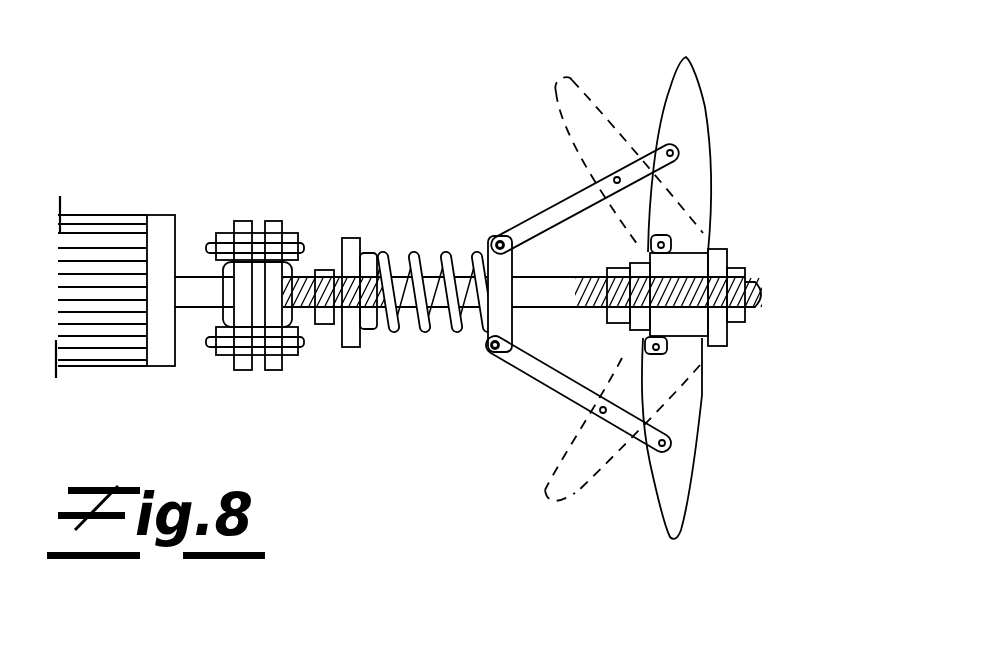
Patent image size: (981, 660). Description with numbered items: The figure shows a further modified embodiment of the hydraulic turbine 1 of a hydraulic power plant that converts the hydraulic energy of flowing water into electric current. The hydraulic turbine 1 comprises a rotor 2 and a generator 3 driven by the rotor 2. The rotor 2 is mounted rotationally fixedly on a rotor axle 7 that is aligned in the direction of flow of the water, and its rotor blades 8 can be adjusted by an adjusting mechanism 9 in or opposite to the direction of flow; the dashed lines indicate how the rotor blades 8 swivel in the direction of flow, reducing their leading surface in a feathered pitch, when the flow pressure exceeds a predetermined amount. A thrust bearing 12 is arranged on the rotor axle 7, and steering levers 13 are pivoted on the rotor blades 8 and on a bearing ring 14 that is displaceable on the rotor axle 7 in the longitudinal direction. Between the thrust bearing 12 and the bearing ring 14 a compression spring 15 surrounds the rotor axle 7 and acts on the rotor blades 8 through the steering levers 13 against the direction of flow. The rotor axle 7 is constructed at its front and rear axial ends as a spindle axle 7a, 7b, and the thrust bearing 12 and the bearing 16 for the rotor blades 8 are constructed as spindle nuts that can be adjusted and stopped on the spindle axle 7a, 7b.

The hydraulic turbine 1 is at (757, 81).
The rotor 2 is at (690, 521).
The generator 3 is at (95, 228).
The rotor axle 7 is at (558, 302).
The spindle axle 7a is at (743, 282).
The spindle axle 7b is at (303, 273).
The rotor blades 8 is at (658, 498).
The adjusting mechanism 9 is at (466, 389).
The thrust bearing 12 is at (349, 340).
The steering levers 13 is at (558, 398).
The bearing ring 14 is at (486, 256).
The compression spring 15 is at (408, 254).
The bearing for the rotor blades 16 is at (720, 338).